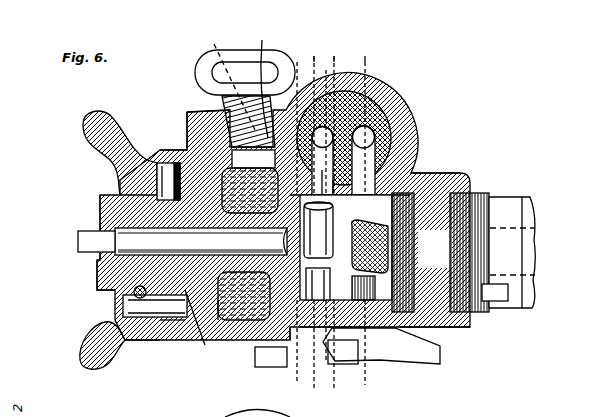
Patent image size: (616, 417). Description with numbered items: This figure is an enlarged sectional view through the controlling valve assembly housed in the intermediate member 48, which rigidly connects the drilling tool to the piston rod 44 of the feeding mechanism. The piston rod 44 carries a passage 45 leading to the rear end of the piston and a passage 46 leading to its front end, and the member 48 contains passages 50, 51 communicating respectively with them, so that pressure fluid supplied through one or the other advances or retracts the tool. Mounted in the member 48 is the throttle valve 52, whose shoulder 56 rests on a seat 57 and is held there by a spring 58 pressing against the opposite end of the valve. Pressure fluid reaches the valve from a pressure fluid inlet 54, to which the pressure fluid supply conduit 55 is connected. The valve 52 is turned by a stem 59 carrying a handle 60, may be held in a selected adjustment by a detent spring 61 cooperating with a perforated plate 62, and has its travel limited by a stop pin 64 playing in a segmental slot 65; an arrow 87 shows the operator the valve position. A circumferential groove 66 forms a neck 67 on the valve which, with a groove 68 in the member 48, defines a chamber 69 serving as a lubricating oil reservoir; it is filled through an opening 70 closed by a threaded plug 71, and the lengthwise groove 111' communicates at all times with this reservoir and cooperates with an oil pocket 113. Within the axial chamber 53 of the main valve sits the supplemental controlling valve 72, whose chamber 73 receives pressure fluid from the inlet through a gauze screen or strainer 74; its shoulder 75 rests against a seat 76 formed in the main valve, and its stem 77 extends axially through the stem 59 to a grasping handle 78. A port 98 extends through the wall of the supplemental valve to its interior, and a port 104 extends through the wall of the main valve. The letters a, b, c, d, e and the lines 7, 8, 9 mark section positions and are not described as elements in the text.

The lengthwise groove 111' is at (232, 80).
The oil pocket 113 is at (268, 81).
The threaded plug 71 is at (196, 73).
The circumferential groove 66 is at (175, 148).
The opening 70 is at (205, 148).
The detent spring 61 is at (160, 163).
The reduced portion or neck 67 is at (188, 150).
The arrow 87 is at (84, 125).
The grasping handle 78 is at (100, 199).
The seat 76 is at (250, 181).
The stem 77 is at (118, 238).
The stem 59 is at (97, 278).
The stop pin 64 is at (123, 306).
The handle 60 is at (90, 334).
The segmental slot 65 is at (145, 340).
The intermediate member 48 is at (164, 322).
The plate 62 is at (190, 318).
The seat 57 is at (195, 322).
The shoulder 56 is at (205, 290).
The groove 68 is at (232, 330).
The chamber 69 is at (271, 357).
The shoulder 75 is at (278, 367).
The piston rod 44 is at (340, 135).
The passage 45 is at (360, 132).
The passage 46 is at (364, 140).
The passage 50 is at (360, 170).
The passage 51 is at (375, 185).
The throttle valve 52 is at (395, 188).
The port 98 is at (455, 200).
The pressure fluid supply conduit 55 is at (534, 200).
The gauze screen or strainer 74 is at (370, 240).
The spring 58 is at (403, 258).
The supplemental controlling valve 72 is at (455, 280).
The axial chamber 53 is at (362, 330).
The pressure fluid inlet 54 is at (420, 335).
The chamber 73 is at (343, 352).
The port 104 is at (385, 362).
The section line 7 is at (308, 216).
The section line 8 is at (329, 216).
The section line 9 is at (364, 219).
The section line a is at (292, 217).
The section line b is at (310, 217).
The section line c is at (319, 211).
The section line d is at (331, 217).
The section line e is at (363, 218).